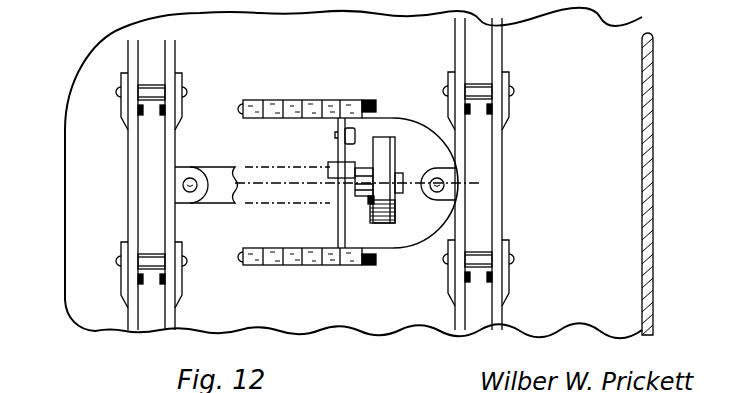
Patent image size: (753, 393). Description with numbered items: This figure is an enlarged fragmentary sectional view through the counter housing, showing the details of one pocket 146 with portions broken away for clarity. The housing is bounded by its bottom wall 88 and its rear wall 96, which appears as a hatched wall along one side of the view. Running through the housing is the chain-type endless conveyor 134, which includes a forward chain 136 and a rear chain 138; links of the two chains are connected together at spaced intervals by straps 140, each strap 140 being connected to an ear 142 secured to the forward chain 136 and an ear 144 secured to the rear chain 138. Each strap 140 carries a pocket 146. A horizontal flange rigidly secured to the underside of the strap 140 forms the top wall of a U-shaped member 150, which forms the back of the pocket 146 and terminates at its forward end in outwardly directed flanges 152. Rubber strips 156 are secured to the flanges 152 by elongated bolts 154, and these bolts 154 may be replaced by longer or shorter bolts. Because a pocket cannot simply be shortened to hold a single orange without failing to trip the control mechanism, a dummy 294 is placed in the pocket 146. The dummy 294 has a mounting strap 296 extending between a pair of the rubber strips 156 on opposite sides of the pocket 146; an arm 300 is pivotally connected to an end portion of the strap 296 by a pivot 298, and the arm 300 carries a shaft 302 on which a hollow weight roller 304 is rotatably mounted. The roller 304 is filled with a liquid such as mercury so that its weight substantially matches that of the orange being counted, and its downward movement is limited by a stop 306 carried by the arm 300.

The bottom wall 88 is at (598, 36).
The rear wall 96 is at (653, 192).
The endless conveyor 134 is at (502, 174).
The forward chain 136 is at (129, 153).
The rear chain 138 is at (501, 185).
The strap 140 is at (218, 176).
The ear 142 is at (192, 193).
The ear 144 is at (447, 195).
The pocket 146 is at (392, 249).
The U-shaped member 150 is at (386, 108).
The outwardly directed flange 152 is at (368, 100).
The elongated bolt 154 is at (242, 105).
The rubber strip 156 is at (309, 100).
The dummy 294 is at (356, 204).
The mounting strap 296 is at (338, 211).
The pivot 298 is at (335, 135).
The arm 300 is at (386, 122).
The shaft 302 is at (350, 183).
The hollow weight roller 304 is at (395, 160).
The stop 306 is at (328, 166).